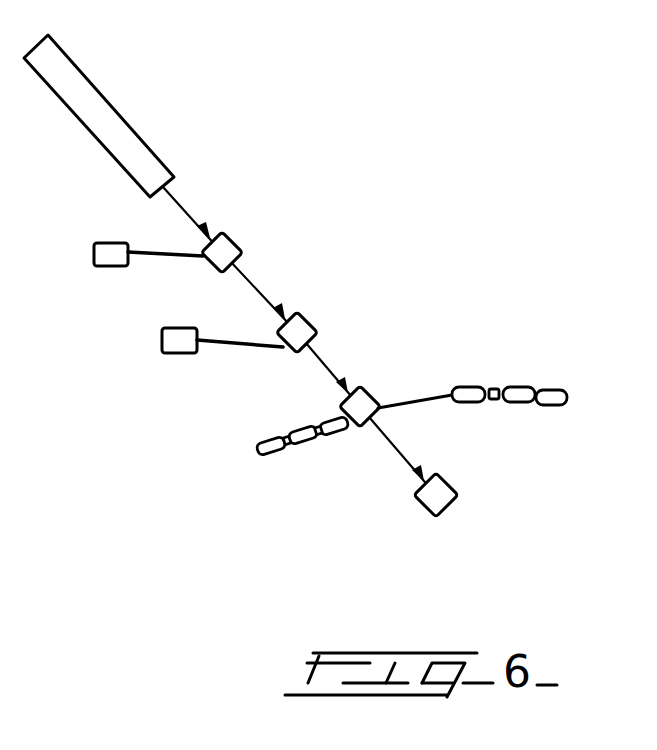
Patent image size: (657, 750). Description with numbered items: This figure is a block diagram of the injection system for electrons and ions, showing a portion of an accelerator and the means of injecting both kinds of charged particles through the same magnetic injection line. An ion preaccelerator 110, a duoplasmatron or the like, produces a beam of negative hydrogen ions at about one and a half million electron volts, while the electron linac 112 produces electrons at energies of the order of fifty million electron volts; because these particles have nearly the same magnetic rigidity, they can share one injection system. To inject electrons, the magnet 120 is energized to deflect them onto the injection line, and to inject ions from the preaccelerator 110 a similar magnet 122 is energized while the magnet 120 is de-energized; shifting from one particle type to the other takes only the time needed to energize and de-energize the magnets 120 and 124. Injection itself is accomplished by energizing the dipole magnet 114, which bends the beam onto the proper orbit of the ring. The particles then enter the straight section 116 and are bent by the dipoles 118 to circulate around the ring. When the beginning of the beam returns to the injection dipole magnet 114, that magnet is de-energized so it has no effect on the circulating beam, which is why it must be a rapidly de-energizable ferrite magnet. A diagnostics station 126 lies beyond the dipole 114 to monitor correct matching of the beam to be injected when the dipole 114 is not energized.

The ion preaccelerator 110 is at (102, 268).
The electron linac 112 is at (172, 355).
The injection dipole magnet 114 is at (372, 388).
The straight section 116 is at (428, 393).
The dipoles 118 is at (335, 440).
The magnet 120 is at (312, 322).
The magnet 122 is at (239, 243).
The magnet 124 is at (158, 159).
The diagnostics station 126 is at (418, 495).